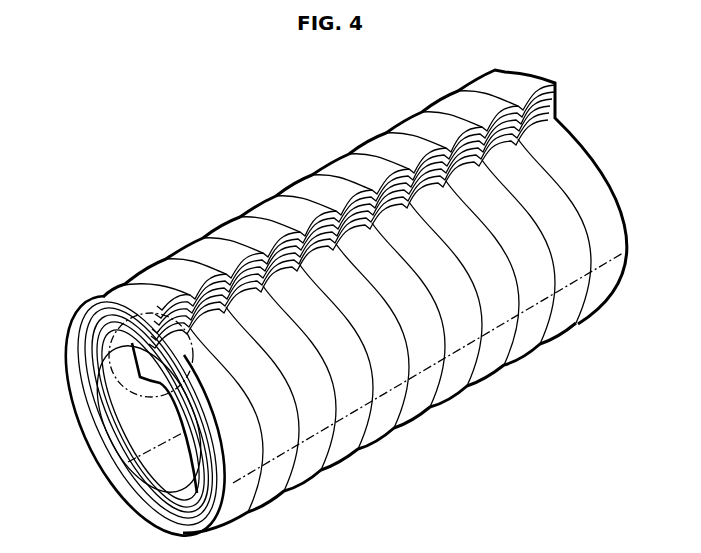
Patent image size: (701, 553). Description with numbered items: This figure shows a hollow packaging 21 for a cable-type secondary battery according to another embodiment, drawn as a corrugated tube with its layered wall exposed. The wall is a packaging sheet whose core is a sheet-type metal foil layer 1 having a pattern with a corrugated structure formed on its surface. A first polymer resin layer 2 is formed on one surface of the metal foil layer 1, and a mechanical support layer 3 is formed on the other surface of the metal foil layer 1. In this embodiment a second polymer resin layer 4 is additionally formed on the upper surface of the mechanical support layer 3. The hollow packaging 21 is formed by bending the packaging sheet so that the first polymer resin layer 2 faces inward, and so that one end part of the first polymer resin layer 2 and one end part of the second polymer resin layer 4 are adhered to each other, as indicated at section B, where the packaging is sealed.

The hollow packaging 21 is at (168, 132).
The second polymer resin layer 4 is at (69, 346).
The mechanical support layer 3 is at (79, 369).
The metal foil layer 1 is at (86, 398).
The first polymer resin layer 2 is at (95, 424).
The section B is at (143, 303).